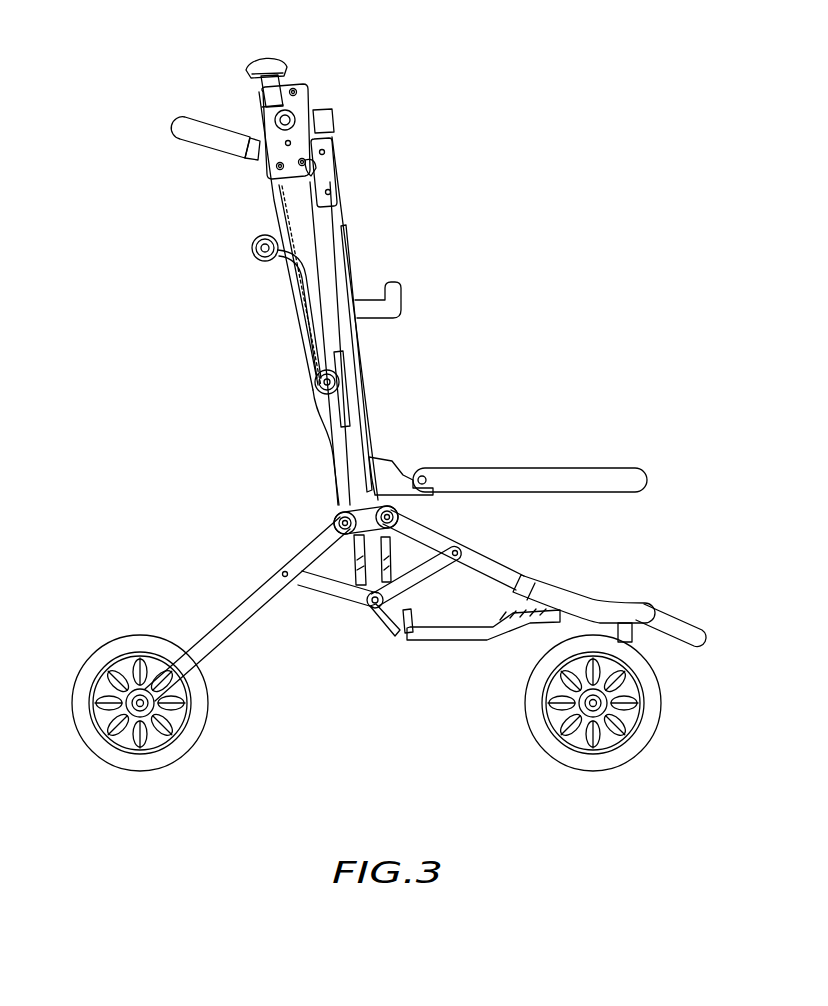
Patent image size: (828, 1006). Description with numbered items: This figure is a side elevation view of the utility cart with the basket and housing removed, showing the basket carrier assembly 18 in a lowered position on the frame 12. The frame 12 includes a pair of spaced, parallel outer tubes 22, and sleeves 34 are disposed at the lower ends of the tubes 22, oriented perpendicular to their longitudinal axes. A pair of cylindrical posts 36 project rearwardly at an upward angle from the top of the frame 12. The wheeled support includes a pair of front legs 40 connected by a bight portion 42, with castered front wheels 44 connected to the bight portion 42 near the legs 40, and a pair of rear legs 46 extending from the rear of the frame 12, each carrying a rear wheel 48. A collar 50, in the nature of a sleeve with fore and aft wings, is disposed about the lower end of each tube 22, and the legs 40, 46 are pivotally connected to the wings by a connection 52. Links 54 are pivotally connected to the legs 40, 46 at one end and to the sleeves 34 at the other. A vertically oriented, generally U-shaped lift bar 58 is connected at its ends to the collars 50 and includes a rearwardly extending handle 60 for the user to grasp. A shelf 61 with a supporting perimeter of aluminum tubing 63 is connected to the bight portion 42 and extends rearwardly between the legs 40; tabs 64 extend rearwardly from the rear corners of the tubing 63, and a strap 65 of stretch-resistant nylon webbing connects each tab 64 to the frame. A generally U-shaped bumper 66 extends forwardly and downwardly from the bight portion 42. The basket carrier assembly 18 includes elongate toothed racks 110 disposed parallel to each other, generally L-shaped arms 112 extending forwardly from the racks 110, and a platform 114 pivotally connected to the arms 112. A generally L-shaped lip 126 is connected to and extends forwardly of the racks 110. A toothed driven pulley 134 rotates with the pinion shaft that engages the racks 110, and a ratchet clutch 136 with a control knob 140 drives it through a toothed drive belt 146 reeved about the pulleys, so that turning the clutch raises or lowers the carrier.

The frame 12 is at (352, 178).
The basket carrier assembly 18 is at (400, 384).
The outer tubes 22 is at (337, 252).
The sleeves 34 is at (368, 606).
The cylindrical posts 36 is at (253, 153).
The front legs 40 is at (547, 592).
The bight portion 42 is at (655, 610).
The castered front wheels 44 is at (660, 680).
The rear legs 46 is at (286, 566).
The rear wheel 48 is at (124, 640).
The collar 50 is at (352, 508).
The pivotal connection 52 is at (338, 515).
The links 54 is at (470, 557).
The lift bar 58 is at (316, 428).
The handle 60 is at (252, 245).
The shelf 61 is at (453, 640).
The aluminum tubing 63 is at (482, 640).
The tabs 64 is at (404, 636).
The strap 65 is at (378, 622).
The bumper 66 is at (702, 628).
The toothed racks 110 is at (366, 356).
The L-shaped arms 112 is at (392, 462).
The platform 114 is at (508, 467).
The L-shaped lip 126 is at (401, 300).
The toothed driven pulley 134 is at (315, 384).
The ratchet clutch 136 is at (300, 88).
The control knob 140 is at (274, 57).
The toothed drive belt 146 is at (293, 283).